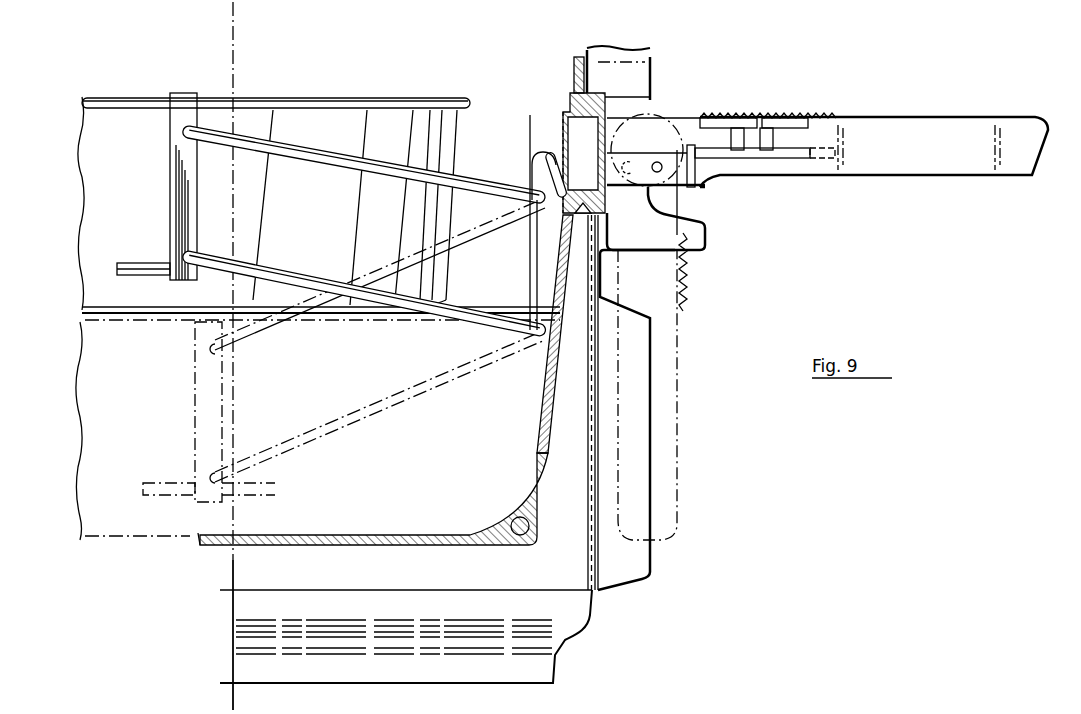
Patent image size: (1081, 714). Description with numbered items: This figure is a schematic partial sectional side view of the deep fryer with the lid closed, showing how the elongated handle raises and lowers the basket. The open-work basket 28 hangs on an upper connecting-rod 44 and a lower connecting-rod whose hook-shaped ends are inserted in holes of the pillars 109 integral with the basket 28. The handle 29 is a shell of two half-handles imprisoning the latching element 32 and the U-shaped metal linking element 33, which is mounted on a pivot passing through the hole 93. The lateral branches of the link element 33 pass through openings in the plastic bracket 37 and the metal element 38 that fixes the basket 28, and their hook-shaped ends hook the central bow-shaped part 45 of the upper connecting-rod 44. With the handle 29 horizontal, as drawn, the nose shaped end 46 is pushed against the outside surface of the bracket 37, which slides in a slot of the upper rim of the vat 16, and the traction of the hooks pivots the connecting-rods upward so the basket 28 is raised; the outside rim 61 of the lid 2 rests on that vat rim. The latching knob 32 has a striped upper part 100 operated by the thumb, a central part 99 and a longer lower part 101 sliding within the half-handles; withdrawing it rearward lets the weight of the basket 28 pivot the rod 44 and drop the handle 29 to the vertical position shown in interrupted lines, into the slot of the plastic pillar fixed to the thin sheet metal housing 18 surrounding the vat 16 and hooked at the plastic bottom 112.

The upper lid cover 2 is at (652, 74).
The vat 16 is at (533, 471).
The thin sheet metal housing 18 is at (586, 428).
The open-work basket 28 is at (360, 100).
The elongated arm (handle) 29 is at (900, 147).
The latching element (latching knob) 32 is at (763, 158).
The linking element 33 is at (680, 148).
The bracket 37 is at (566, 98).
The metal element (metal bracket) 38 is at (535, 264).
The upper connecting-rod 44 is at (304, 157).
The central bow-shaped part 45 is at (555, 155).
The nose shaped end 46 is at (660, 147).
The outside rim of lid 61 is at (574, 67).
The hole 93 is at (662, 172).
The central part of latching knob 99 is at (766, 118).
The upper part with stripes 100 is at (738, 112).
The lower part 101 is at (797, 158).
The pillar 109 is at (170, 180).
The plastic bottom 112 is at (400, 640).